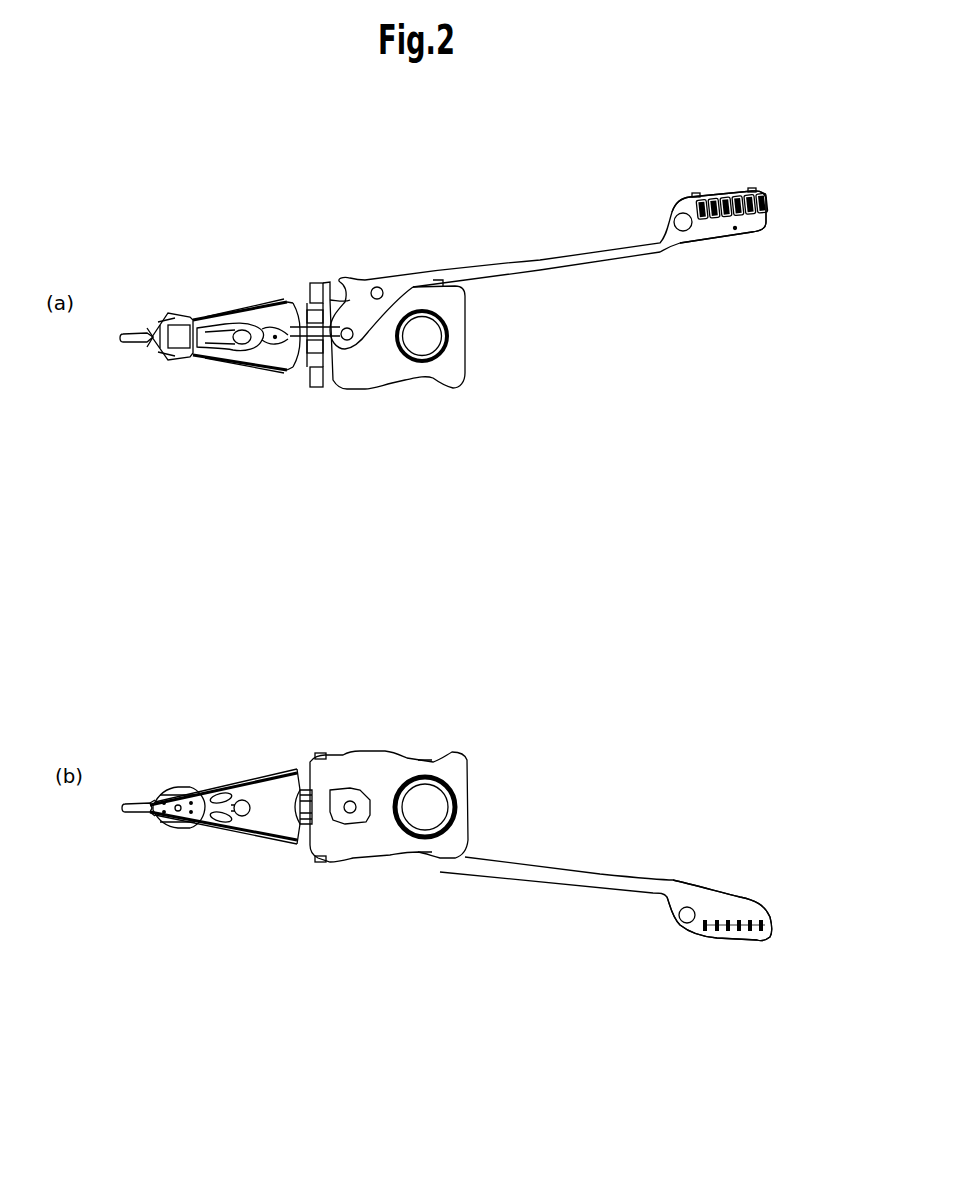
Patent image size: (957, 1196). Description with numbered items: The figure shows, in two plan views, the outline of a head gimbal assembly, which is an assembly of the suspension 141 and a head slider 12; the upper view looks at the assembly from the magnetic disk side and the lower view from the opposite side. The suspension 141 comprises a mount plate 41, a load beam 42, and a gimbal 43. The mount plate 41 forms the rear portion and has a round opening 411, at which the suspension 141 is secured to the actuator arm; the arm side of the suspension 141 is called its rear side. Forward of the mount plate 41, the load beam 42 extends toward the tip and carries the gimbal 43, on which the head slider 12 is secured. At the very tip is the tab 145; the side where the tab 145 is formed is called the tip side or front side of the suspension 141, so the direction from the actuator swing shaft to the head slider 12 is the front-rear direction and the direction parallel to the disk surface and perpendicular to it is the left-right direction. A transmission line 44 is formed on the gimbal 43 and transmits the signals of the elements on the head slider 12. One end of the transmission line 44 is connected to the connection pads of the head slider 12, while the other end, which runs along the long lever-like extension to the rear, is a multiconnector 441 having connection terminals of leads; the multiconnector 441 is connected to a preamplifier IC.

The head slider 12 is at (173, 360).
The mount plate 41 is at (432, 382).
The load beam 42 is at (310, 377).
The gimbal 43 is at (283, 290).
The transmission line 44 is at (340, 283).
The suspension 141 is at (420, 247).
The tab 145 is at (128, 330).
The opening 411 is at (438, 326).
The multiconnector 441 is at (704, 197).